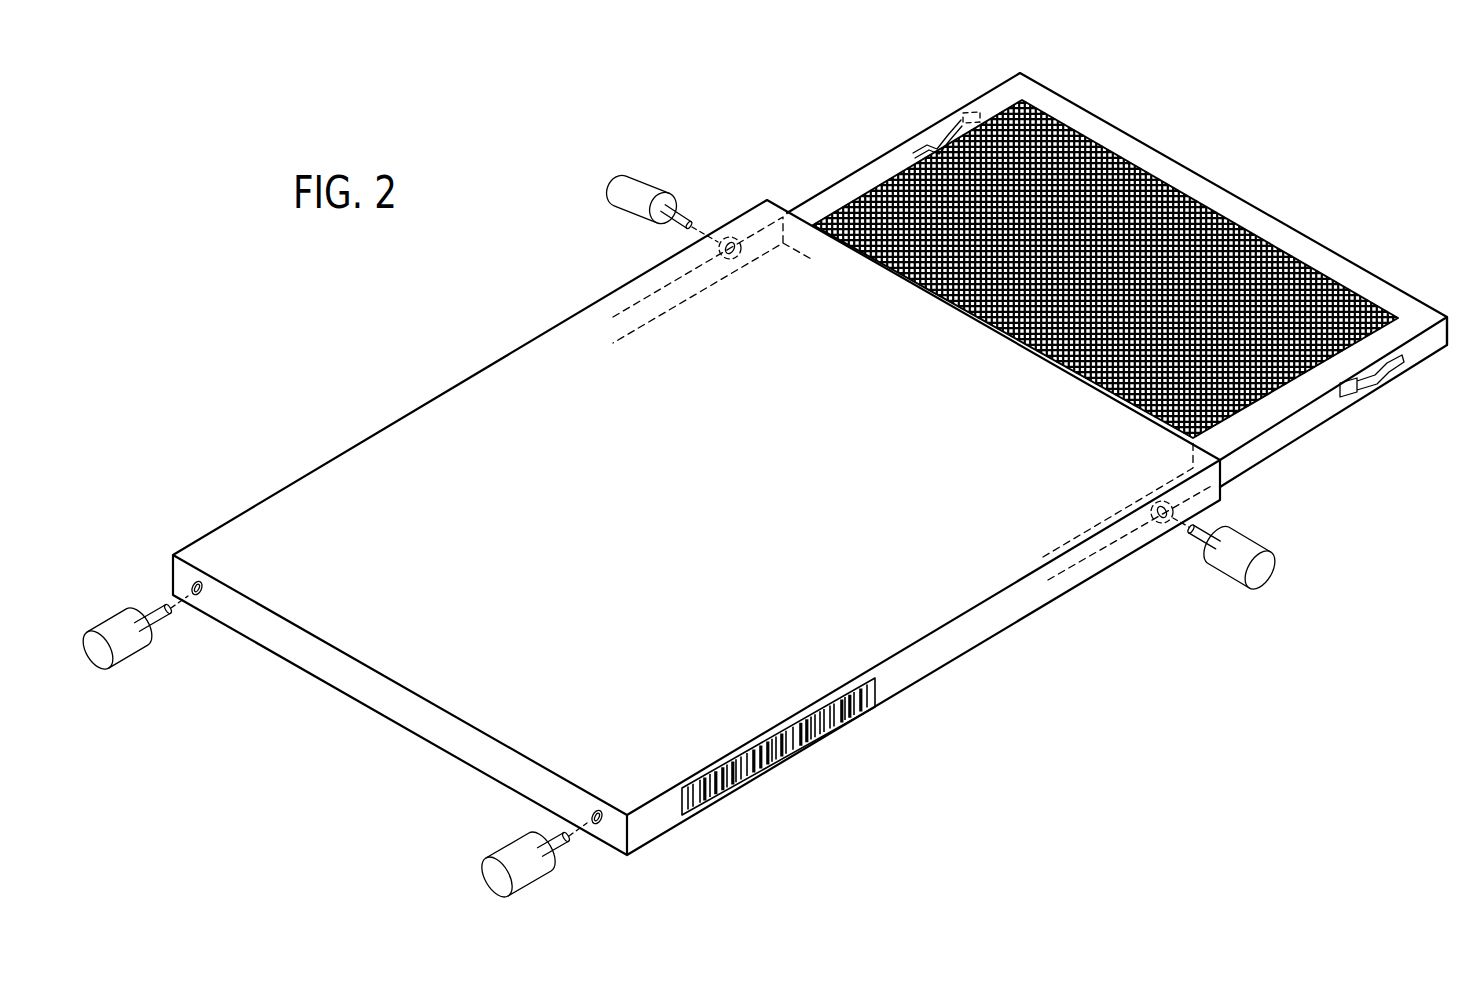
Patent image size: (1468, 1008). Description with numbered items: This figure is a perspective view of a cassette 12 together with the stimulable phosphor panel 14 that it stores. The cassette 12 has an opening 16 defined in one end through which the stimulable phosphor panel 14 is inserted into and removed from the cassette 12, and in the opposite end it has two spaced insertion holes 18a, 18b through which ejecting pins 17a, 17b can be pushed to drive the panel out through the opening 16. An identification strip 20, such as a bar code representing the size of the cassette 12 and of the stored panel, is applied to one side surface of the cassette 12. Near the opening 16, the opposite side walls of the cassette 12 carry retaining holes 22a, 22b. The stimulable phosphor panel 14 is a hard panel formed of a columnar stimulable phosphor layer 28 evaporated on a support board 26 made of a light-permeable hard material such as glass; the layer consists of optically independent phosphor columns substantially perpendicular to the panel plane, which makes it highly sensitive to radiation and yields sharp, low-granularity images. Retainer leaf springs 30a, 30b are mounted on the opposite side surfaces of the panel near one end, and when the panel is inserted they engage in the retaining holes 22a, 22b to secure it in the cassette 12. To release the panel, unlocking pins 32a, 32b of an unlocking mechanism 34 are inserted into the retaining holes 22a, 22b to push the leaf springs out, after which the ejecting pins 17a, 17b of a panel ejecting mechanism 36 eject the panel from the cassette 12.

The cassette 12 is at (460, 397).
The stimulable phosphor panel 14 is at (1222, 207).
The opening 16 is at (1240, 466).
The ejecting pin 17a is at (545, 835).
The ejecting pin 17b is at (153, 612).
The insertion hole 18a is at (595, 827).
The insertion hole 18b is at (197, 600).
The identification strip 20 is at (778, 753).
The retaining hole 22a is at (1153, 498).
The retaining hole 22b is at (722, 240).
The support board 26 is at (1410, 312).
The columnar stimulable phosphor layer 28 is at (1112, 157).
The retainer leaf spring 30a is at (1383, 385).
The retainer leaf spring 30b is at (958, 107).
The unlocking pin 32a is at (1197, 540).
The unlocking pin 32b is at (687, 227).
The unlocking mechanism 34 is at (665, 168).
The panel ejecting mechanism 36 is at (138, 655).